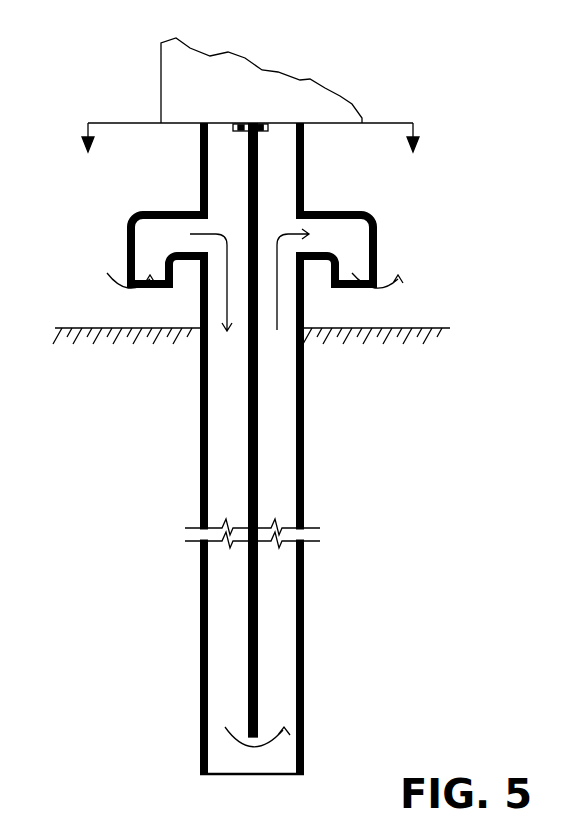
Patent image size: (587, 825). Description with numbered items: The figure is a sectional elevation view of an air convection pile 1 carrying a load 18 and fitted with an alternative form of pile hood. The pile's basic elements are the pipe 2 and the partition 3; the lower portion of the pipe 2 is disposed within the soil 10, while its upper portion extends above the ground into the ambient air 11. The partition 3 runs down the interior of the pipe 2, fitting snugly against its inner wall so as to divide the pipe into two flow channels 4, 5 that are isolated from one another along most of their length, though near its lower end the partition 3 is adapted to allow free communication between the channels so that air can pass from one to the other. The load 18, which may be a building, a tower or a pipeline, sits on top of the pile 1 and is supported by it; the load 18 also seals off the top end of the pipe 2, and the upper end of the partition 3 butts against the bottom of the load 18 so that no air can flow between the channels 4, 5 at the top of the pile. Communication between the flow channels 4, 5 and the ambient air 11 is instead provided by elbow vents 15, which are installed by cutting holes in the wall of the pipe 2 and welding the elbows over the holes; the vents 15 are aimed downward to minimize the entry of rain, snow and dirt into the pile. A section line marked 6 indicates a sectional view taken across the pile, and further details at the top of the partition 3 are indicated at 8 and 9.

The air convection pile 1 is at (324, 456).
The pipe 2 is at (199, 458).
The partition 3 is at (247, 604).
The flow channel 4 is at (219, 424).
The flow channel 5 is at (269, 424).
The section line 6- 6 is at (251, 150).
The coupling fitting 8 is at (268, 130).
The collar 9 is at (250, 130).
The soil 10 is at (75, 397).
The ambient air 11 is at (471, 235).
The elbow vents 15 is at (127, 239).
The load 18 is at (161, 92).